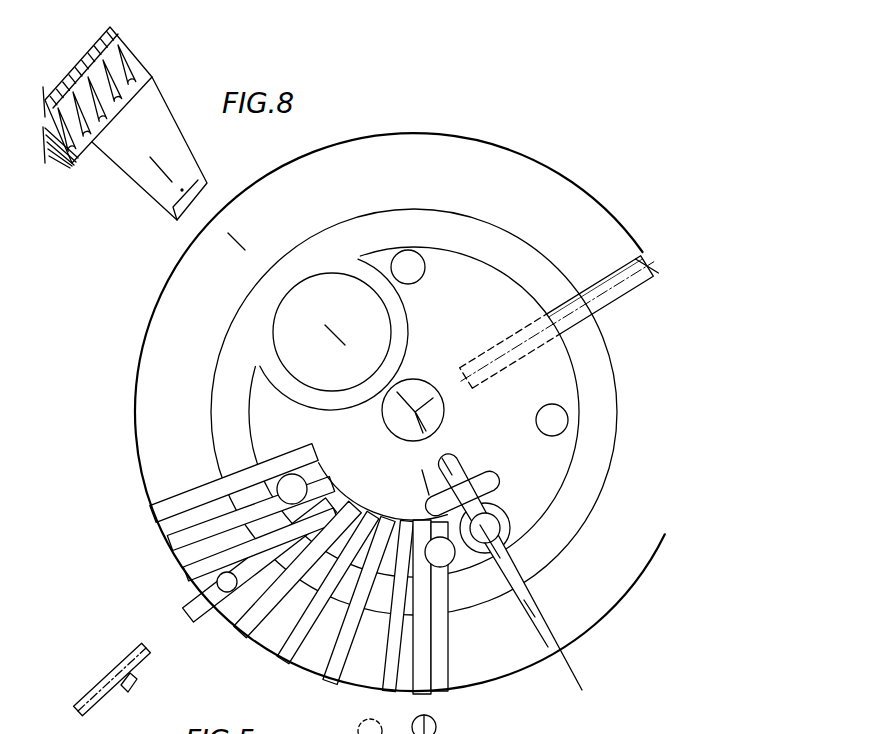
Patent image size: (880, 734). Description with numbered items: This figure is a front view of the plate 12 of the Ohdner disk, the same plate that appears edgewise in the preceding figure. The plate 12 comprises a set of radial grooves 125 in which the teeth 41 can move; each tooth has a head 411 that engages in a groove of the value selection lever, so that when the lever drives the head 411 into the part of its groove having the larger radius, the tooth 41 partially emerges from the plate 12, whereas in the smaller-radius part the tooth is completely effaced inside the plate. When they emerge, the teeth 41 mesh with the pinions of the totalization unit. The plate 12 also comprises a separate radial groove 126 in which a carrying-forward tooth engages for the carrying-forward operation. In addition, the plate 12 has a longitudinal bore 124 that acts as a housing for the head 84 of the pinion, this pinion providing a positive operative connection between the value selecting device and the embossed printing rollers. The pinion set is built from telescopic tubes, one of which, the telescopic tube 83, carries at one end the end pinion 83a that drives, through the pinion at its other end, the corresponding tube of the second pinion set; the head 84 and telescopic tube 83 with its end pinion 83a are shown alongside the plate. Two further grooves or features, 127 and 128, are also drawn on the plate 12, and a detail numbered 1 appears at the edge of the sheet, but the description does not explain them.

The plate 12 is at (470, 147).
The longitudinal bore 124 is at (332, 332).
The radial grooves 125 is at (261, 580).
The radial groove 126 is at (557, 633).
The short lever 127 is at (476, 478).
The stem bar 128 is at (615, 287).
The teeth 41 is at (182, 606).
The heads of the teeth 411 is at (227, 593).
The telescopic tube 83 is at (150, 153).
The head of the pinion 84 is at (128, 95).
The end pinion 83a is at (114, 37).
The wheel 1 is at (436, 726).